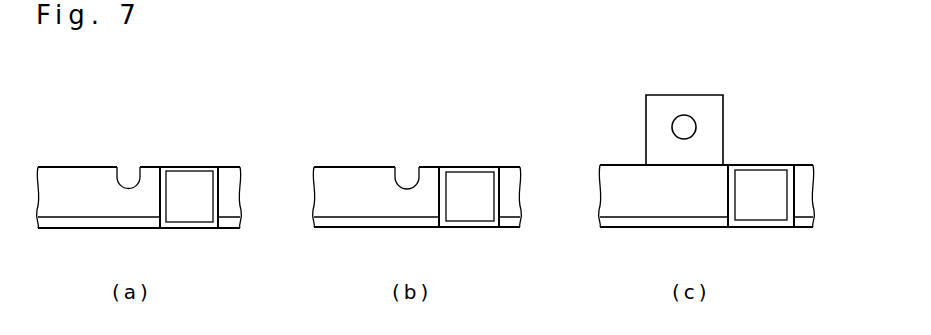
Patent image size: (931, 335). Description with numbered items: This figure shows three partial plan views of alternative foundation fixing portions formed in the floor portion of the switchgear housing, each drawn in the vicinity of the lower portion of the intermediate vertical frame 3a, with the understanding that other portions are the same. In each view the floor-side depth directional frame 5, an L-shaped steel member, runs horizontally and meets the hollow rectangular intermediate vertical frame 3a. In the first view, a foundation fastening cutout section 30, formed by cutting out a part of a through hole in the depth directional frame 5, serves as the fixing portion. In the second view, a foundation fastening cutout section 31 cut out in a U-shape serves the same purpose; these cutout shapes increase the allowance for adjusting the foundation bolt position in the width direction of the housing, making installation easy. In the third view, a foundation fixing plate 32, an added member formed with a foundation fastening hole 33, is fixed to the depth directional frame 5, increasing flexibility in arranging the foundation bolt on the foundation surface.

The depth directional frame 5 is at (90, 166).
The intermediate vertical frame 3a is at (190, 166).
The foundation fastening cutout section 30 is at (130, 170).
The foundation fastening cutout section 31 is at (404, 176).
The foundation fixing plate 32 is at (665, 95).
The foundation fastening hole 33 is at (685, 127).